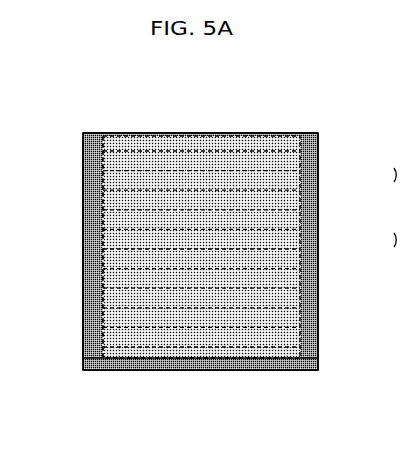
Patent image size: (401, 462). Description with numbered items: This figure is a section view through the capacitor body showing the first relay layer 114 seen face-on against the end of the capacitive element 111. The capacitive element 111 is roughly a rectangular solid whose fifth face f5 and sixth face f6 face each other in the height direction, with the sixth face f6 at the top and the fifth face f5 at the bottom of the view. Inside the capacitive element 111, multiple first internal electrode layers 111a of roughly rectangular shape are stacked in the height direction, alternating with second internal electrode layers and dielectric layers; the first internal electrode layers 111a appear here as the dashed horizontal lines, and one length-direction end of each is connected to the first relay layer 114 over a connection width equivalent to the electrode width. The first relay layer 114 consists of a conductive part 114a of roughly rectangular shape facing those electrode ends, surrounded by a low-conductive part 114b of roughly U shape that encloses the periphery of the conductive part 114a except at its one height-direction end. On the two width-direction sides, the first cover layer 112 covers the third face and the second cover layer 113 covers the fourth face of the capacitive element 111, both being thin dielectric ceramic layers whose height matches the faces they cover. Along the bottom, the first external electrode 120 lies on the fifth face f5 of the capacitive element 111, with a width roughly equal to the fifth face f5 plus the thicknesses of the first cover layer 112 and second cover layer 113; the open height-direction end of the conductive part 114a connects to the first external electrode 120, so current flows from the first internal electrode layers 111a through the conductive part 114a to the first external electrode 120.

The first relay layer 114 is at (91, 133).
The conductive part 114a is at (133, 180).
The low-conductive part 114b is at (183, 145).
The first internal electrode layer 111a is at (252, 160).
The sixth face f6 is at (277, 133).
The capacitive element 111 is at (83, 175).
The second cover layer 113 is at (83, 210).
The first cover layer 112 is at (318, 213).
The first external electrode 120 is at (195, 360).
The fifth face f5 is at (275, 360).